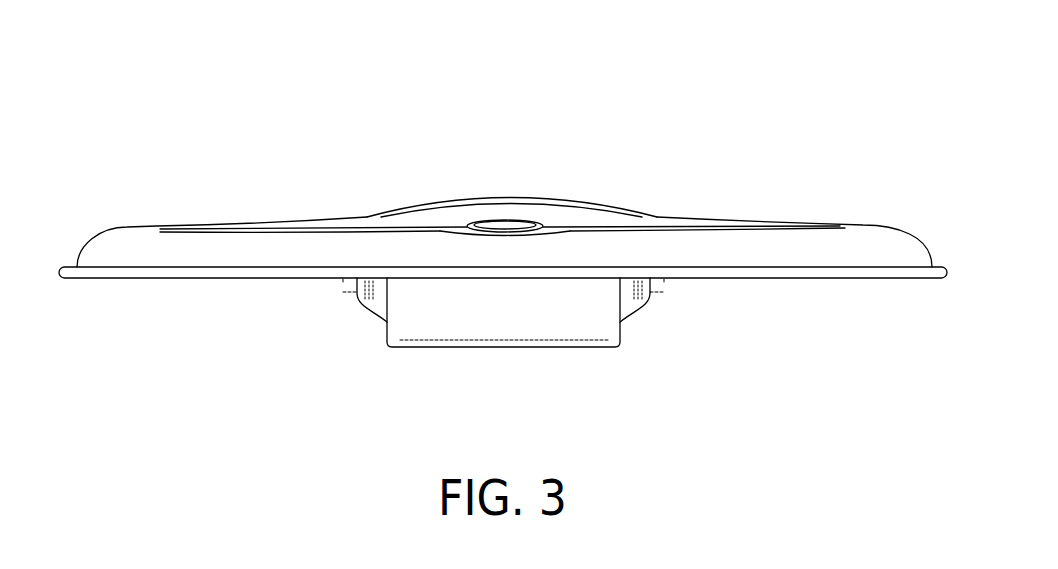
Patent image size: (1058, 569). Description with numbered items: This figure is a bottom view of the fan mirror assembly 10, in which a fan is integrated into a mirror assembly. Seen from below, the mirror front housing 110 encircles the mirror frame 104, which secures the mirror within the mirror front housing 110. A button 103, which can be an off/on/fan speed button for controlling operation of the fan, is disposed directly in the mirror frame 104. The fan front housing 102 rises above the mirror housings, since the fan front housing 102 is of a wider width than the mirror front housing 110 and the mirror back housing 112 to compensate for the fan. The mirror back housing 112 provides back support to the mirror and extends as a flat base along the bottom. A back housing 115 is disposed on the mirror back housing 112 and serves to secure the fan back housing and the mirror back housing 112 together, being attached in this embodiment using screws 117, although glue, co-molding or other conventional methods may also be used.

The fan mirror assembly 10 is at (70, 52).
The fan front housing 102 is at (605, 202).
The button 103 is at (503, 224).
The mirror frame 104 is at (175, 225).
The mirror front housing 110 is at (882, 247).
The mirror back housing 112 is at (127, 270).
The back housing 115 is at (400, 335).
The screws 117 is at (352, 282).